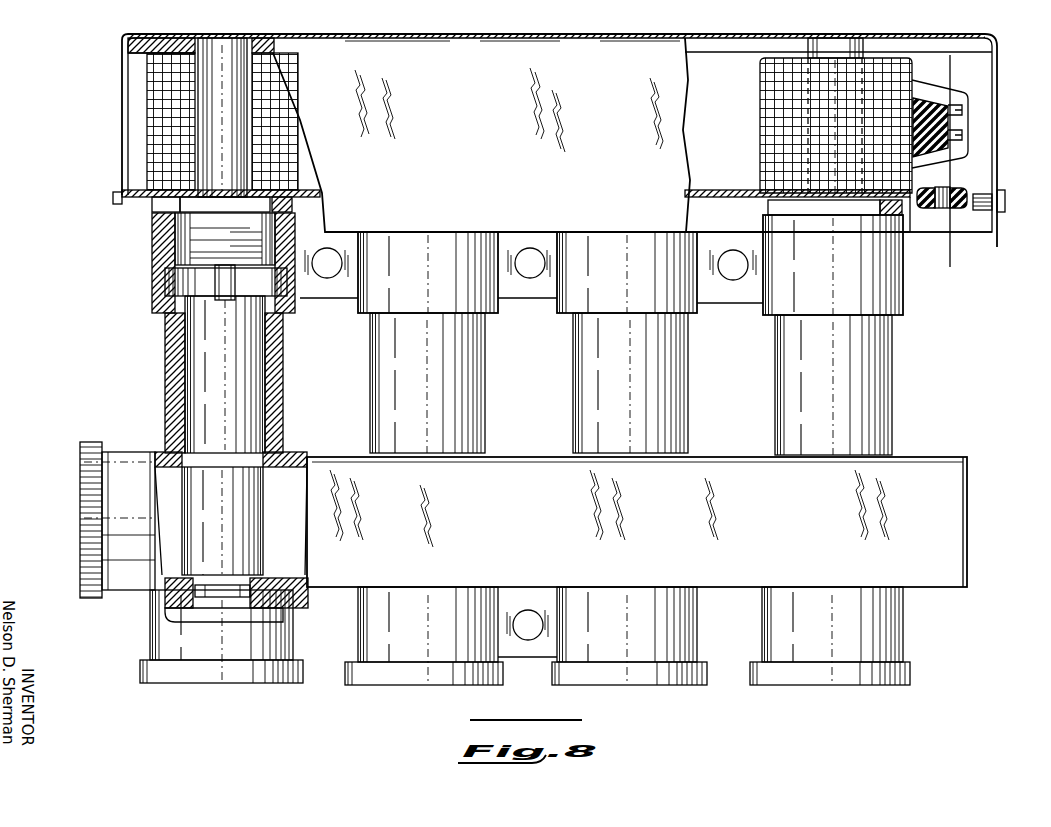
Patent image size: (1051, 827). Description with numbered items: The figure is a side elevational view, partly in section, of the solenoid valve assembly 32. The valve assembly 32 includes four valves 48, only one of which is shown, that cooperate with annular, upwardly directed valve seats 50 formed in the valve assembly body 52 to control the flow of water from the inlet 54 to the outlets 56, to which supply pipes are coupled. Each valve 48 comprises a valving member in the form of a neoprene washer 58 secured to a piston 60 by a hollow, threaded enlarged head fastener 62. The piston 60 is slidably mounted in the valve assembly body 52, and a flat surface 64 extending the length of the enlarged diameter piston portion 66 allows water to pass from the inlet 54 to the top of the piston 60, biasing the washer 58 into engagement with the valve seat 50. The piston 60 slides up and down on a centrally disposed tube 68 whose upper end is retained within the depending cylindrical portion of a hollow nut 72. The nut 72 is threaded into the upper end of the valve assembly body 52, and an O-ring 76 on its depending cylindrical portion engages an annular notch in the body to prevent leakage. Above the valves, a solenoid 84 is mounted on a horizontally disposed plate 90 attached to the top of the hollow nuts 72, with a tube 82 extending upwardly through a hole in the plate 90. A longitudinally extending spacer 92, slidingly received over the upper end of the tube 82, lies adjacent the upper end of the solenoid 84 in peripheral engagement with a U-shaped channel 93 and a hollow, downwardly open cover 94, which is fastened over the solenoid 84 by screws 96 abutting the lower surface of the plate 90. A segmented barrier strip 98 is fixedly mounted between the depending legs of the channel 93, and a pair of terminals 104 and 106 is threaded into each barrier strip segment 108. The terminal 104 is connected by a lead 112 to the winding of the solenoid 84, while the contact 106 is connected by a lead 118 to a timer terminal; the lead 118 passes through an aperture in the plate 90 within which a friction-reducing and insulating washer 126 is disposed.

The valve assembly 32 is at (916, 286).
The valve 48 is at (182, 518).
The valve seat 50 is at (262, 580).
The valve assembly body 52 is at (540, 529).
The inlet 54 is at (80, 492).
The outlet 56 is at (303, 664).
The neoprene washer 58 is at (220, 576).
The piston 60 is at (180, 393).
The enlarged head fastener 62 is at (226, 592).
The flat surface 64 is at (183, 366).
The enlarged diameter piston portion 66 is at (248, 400).
The tube 68 is at (270, 302).
The hollow nut 72 is at (185, 244).
The O-ring 76 is at (292, 220).
The tube 82 is at (248, 137).
The solenoid 84 is at (145, 115).
The plate 90 is at (712, 202).
The spacer 92 is at (998, 42).
The U-shaped channel 93 is at (906, 36).
The cover 94 is at (991, 136).
The screw 96 is at (1002, 223).
The segmented barrier strip 98 is at (918, 208).
The terminal 104 is at (962, 111).
The terminal 106 is at (958, 140).
The barrier strip segment 108 is at (922, 192).
The lead 112 is at (950, 72).
The lead 118 is at (950, 252).
The insulating washer 126 is at (960, 192).